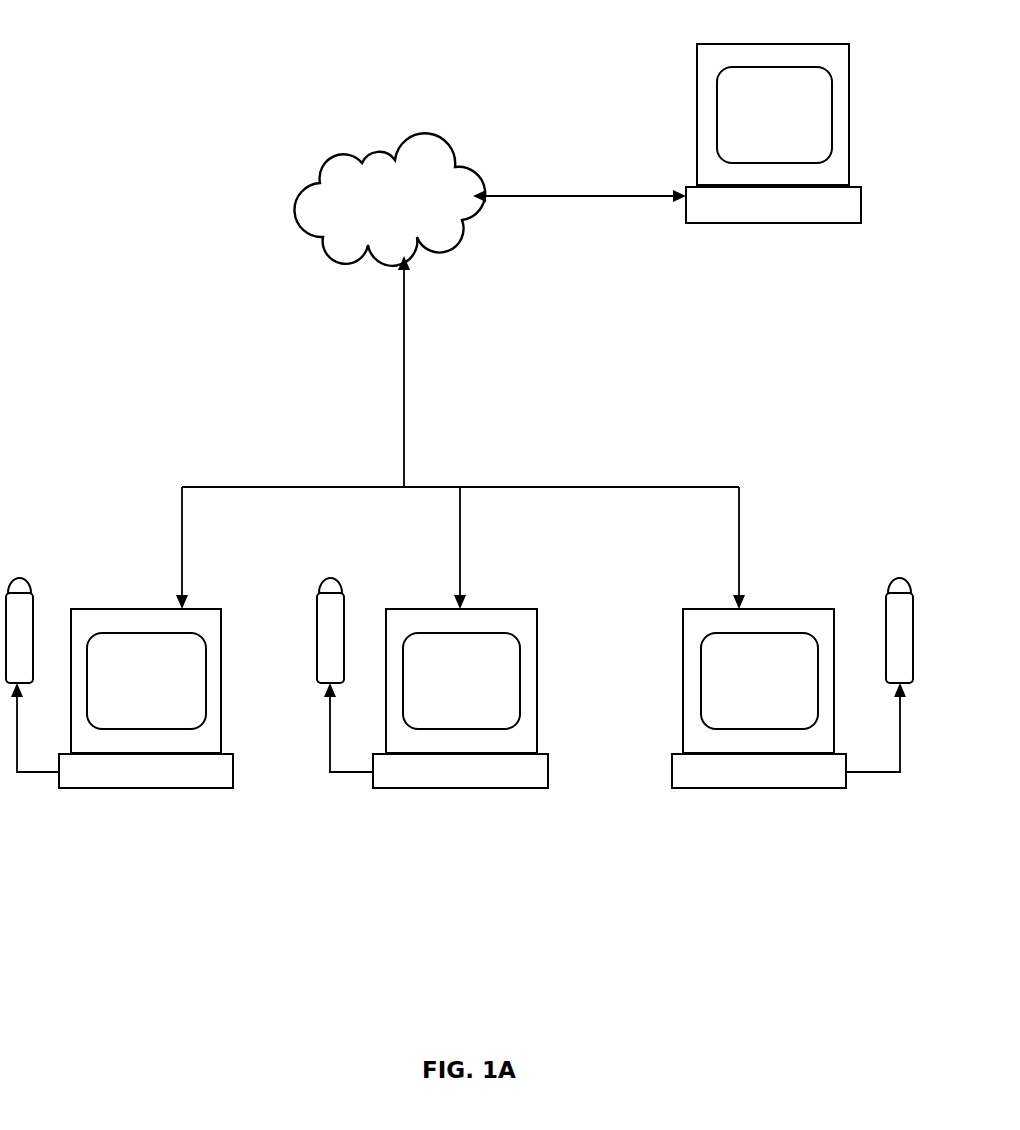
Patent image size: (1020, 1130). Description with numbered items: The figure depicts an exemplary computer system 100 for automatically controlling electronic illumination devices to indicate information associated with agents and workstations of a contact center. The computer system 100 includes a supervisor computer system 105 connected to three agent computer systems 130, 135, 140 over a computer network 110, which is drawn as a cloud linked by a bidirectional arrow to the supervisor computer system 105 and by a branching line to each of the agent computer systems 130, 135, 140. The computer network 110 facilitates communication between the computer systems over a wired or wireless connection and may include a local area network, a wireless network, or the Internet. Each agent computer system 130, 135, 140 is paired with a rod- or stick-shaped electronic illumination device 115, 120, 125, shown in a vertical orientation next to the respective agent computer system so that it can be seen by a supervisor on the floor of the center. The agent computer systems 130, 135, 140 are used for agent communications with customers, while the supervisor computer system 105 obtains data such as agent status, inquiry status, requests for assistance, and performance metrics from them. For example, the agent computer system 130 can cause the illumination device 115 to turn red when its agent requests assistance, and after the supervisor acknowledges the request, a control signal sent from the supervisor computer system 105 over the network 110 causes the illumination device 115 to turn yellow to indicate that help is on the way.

The computer system 100 is at (118, 116).
The supervisor computer system 105 is at (697, 83).
The computer network 110 is at (389, 199).
The electronic illumination device 115 is at (12, 575).
The electronic illumination device 120 is at (323, 575).
The electronic illumination device 125 is at (896, 575).
The agent computer system 130 is at (205, 789).
The agent computer system 135 is at (535, 789).
The agent computer system 140 is at (830, 789).